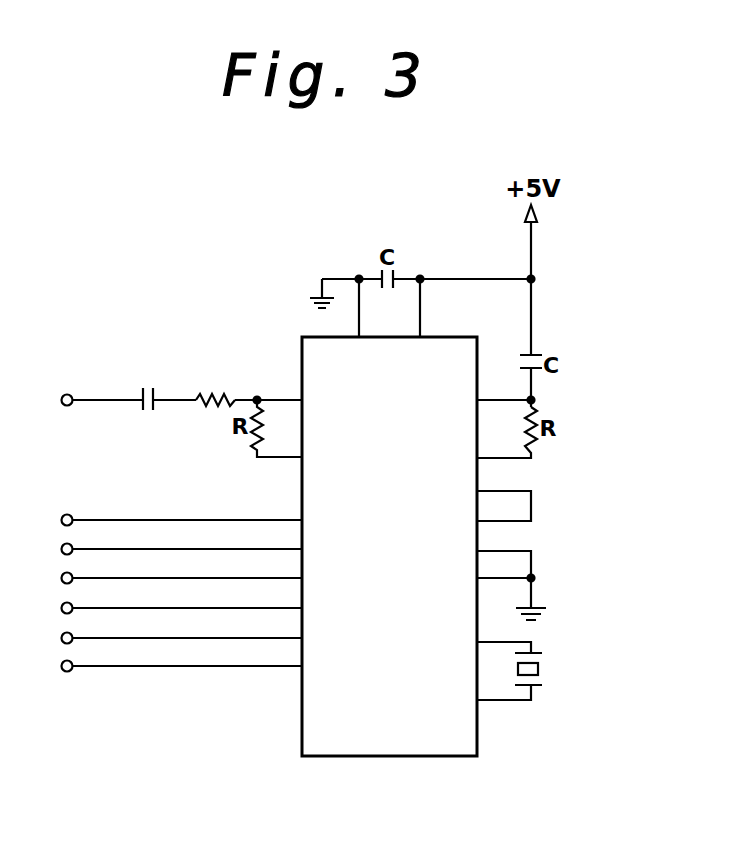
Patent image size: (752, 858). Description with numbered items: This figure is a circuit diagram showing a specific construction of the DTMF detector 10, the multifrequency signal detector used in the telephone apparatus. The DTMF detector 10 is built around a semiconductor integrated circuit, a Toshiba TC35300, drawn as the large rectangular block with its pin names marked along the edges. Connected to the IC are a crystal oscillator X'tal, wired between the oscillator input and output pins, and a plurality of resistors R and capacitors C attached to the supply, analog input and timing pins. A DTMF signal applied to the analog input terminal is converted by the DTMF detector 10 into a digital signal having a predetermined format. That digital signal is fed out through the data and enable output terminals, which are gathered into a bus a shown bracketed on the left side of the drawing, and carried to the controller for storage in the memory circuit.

The DTMF detector 10 is at (391, 757).
The bus a is at (137, 512).
The capacitor C is at (148, 386).
The resistor R is at (215, 384).
The crystal oscillator X'tal is at (576, 662).